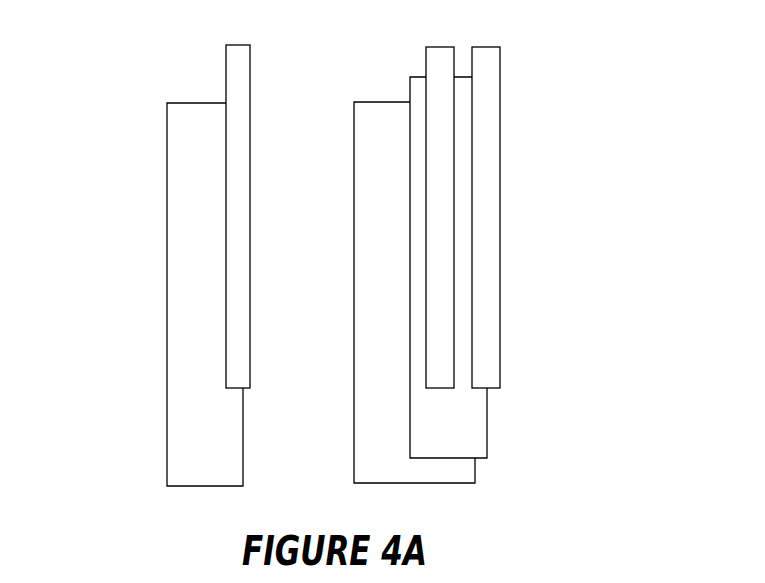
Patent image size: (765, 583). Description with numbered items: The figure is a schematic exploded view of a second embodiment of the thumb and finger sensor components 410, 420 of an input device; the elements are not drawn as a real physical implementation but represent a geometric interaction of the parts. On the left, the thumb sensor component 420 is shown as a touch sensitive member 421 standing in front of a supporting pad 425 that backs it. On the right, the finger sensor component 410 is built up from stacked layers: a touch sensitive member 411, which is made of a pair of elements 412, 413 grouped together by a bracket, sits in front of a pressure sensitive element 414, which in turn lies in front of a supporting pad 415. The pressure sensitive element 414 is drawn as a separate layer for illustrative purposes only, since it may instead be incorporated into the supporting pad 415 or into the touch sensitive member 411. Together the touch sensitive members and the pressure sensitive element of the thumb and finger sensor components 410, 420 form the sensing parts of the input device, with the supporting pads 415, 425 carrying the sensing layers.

The finger sensor component 410 is at (530, 130).
The touch sensitive member 411 is at (614, 230).
The element 412 is at (435, 264).
The element 413 is at (487, 308).
The pressure sensitive element 414 is at (413, 207).
The supporting pad 415 is at (390, 422).
The thumb sensor component 420 is at (136, 174).
The touch sensitive member 421 is at (227, 210).
The supporting pad 425 is at (168, 287).